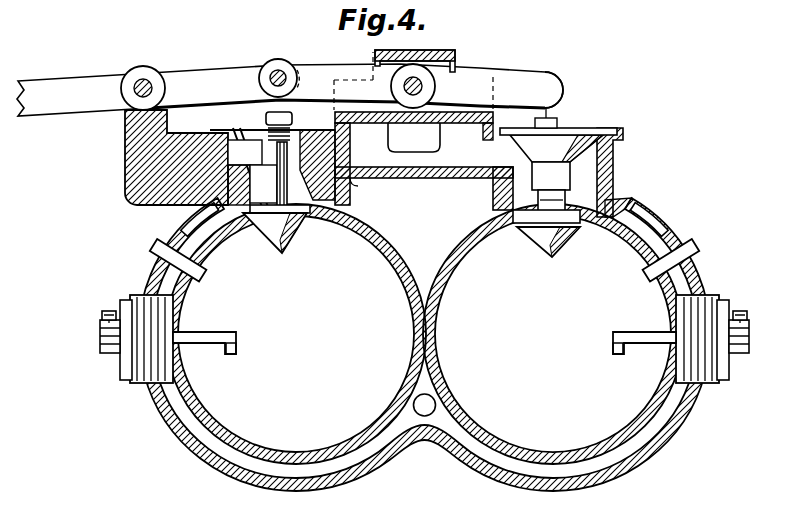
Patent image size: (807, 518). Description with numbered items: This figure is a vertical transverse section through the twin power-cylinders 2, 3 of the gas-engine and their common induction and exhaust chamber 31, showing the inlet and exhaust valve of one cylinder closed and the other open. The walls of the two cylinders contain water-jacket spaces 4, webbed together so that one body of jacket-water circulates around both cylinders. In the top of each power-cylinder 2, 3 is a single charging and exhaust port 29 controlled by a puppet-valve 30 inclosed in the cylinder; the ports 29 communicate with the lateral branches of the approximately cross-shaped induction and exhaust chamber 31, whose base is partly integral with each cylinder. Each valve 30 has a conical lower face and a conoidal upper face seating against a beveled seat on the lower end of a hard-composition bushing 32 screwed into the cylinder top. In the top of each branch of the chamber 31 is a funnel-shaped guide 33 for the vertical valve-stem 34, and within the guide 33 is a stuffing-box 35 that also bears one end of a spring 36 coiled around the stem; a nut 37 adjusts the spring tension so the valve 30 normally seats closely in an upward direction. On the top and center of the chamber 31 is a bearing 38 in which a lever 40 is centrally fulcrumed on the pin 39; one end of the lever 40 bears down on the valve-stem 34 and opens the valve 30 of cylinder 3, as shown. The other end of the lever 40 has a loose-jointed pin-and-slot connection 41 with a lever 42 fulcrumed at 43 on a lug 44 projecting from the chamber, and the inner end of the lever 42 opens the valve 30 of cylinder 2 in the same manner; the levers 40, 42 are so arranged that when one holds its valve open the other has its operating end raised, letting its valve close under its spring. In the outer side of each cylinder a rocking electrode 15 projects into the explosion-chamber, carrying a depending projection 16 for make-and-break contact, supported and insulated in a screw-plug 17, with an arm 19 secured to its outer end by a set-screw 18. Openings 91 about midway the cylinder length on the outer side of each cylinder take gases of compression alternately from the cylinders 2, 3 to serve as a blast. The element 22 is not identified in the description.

The power-cylinder 2 is at (296, 334).
The power-cylinder 3 is at (553, 334).
The water-jacket space 4 is at (703, 274).
The rocking electrode 15 is at (200, 332).
The depending projection 16 is at (237, 347).
The screw-plug 17 is at (132, 358).
The set-screw 18 is at (105, 318).
The arm 19 is at (100, 335).
The housing corner 22 is at (338, 188).
The charging and exhaust port 29 is at (338, 205).
The puppet-valve 30 is at (290, 236).
The induction and exhaust chamber 31 is at (424, 145).
The hard-composition bushing 32 is at (612, 200).
The funnel-shaped guide 33 is at (258, 128).
The valve-stem 34 is at (288, 214).
The stuffing-box 35 is at (300, 142).
The spring 36 is at (289, 114).
The nut 37 is at (286, 112).
The bearing 38 is at (455, 62).
The pin 39 is at (433, 87).
The lever 40 is at (545, 90).
The loose-jointed pin-and-slot connection 41 is at (276, 74).
The lever 42 is at (290, 84).
The fulcrum 43 is at (150, 70).
The lug 44 is at (125, 156).
The opening 91 is at (152, 250).